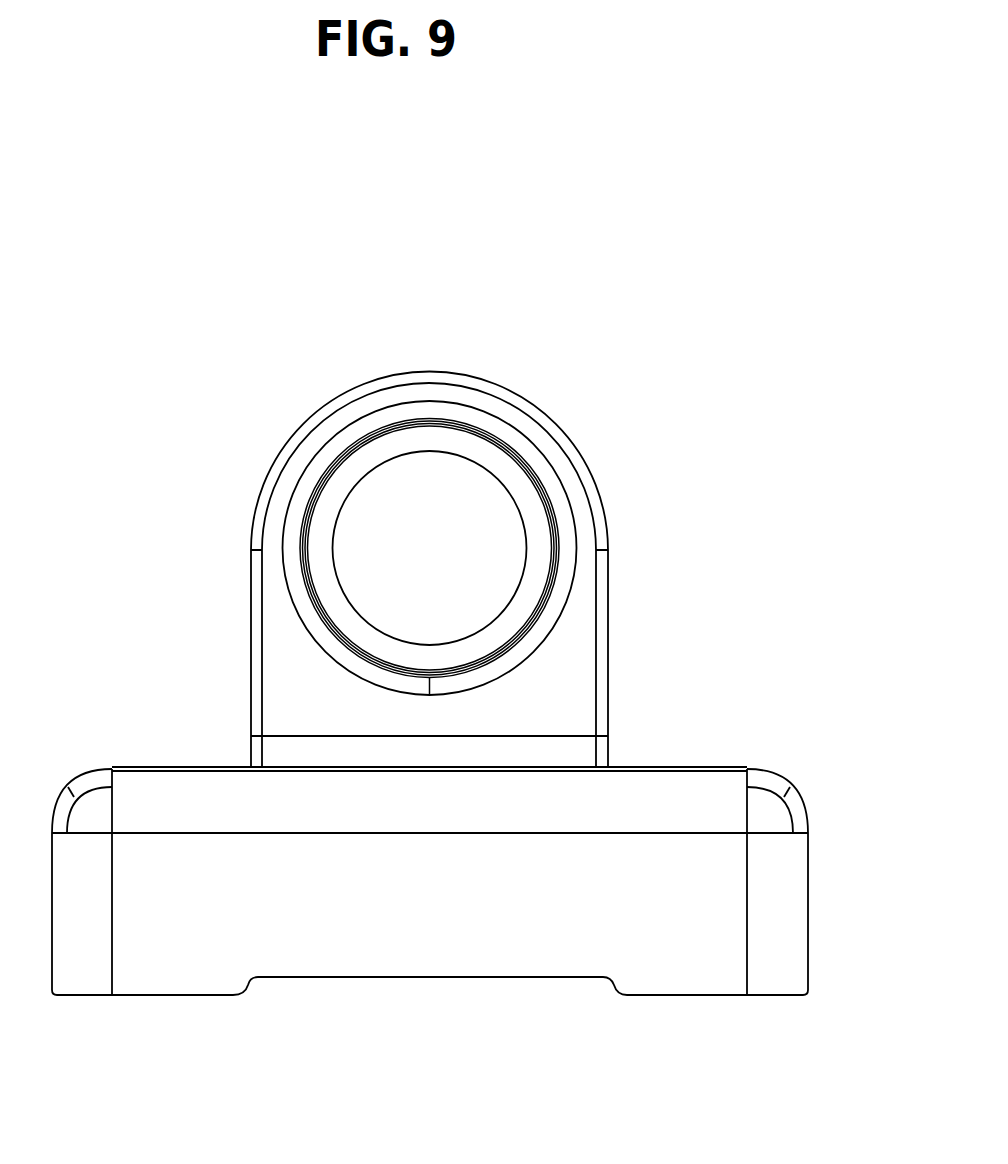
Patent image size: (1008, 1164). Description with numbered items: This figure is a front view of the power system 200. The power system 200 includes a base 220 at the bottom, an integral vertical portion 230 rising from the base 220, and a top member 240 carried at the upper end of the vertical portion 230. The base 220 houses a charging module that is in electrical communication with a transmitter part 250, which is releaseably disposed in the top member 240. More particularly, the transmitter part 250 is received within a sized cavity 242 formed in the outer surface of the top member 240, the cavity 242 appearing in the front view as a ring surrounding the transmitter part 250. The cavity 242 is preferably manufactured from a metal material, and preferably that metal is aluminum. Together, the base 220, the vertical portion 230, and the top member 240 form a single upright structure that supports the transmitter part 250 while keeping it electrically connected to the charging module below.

The power system 200 is at (778, 362).
The base 220 is at (722, 769).
The integral vertical portion 230 is at (250, 736).
The top member 240 is at (285, 447).
The cavity 242 is at (298, 535).
The transmitter part 250 is at (537, 518).